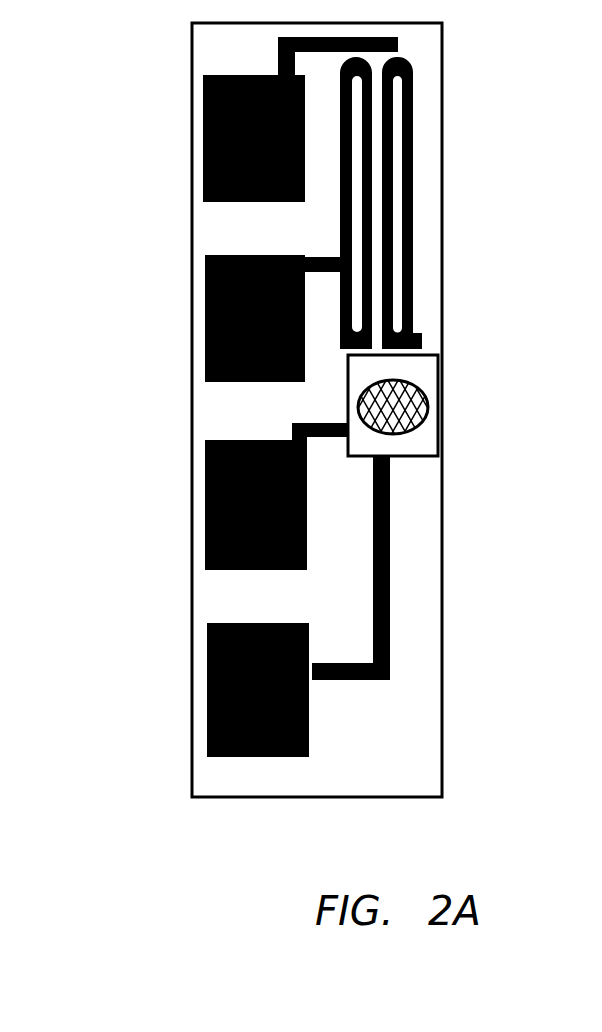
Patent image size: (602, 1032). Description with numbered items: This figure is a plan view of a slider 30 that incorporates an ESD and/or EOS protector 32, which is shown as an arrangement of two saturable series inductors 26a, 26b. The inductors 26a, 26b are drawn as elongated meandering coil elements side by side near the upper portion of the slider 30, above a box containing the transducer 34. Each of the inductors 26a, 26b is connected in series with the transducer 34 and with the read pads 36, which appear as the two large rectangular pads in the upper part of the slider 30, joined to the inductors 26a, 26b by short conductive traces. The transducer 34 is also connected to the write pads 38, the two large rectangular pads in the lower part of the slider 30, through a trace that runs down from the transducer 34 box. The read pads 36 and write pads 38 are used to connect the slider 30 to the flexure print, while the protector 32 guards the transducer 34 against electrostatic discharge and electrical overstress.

The slider 30 is at (310, 410).
The ESD and/or EOS protector 32 is at (430, 215).
The transducer 34 is at (440, 365).
The inductor 26a is at (413, 133).
The inductor 26b is at (363, 236).
The read pads 36 is at (205, 157).
The write pads 38 is at (207, 700).